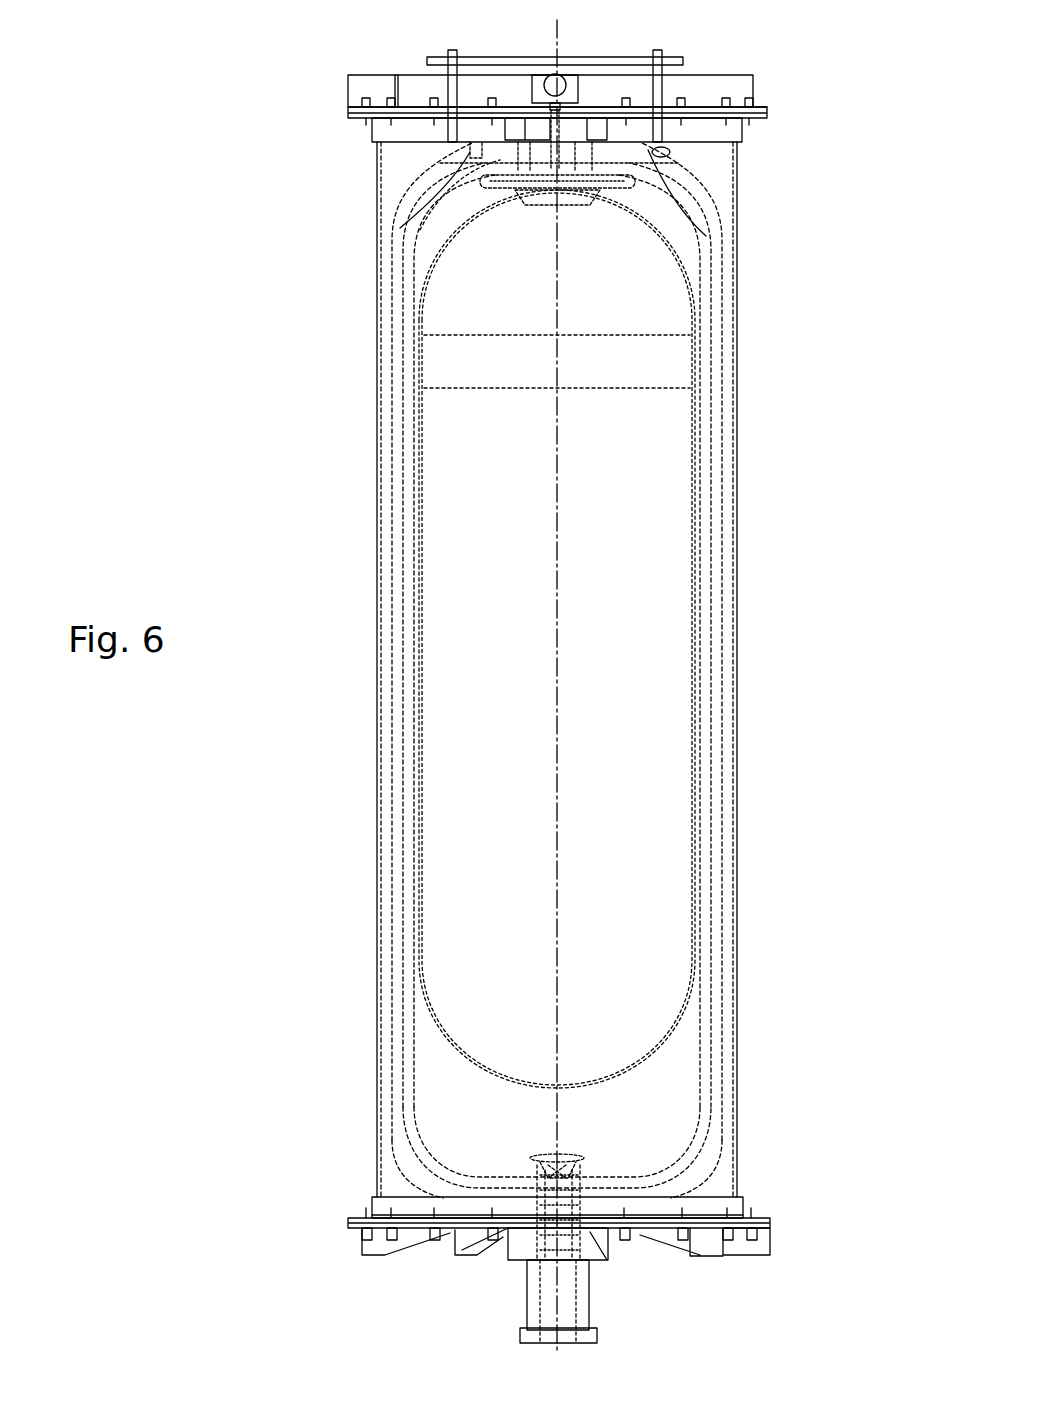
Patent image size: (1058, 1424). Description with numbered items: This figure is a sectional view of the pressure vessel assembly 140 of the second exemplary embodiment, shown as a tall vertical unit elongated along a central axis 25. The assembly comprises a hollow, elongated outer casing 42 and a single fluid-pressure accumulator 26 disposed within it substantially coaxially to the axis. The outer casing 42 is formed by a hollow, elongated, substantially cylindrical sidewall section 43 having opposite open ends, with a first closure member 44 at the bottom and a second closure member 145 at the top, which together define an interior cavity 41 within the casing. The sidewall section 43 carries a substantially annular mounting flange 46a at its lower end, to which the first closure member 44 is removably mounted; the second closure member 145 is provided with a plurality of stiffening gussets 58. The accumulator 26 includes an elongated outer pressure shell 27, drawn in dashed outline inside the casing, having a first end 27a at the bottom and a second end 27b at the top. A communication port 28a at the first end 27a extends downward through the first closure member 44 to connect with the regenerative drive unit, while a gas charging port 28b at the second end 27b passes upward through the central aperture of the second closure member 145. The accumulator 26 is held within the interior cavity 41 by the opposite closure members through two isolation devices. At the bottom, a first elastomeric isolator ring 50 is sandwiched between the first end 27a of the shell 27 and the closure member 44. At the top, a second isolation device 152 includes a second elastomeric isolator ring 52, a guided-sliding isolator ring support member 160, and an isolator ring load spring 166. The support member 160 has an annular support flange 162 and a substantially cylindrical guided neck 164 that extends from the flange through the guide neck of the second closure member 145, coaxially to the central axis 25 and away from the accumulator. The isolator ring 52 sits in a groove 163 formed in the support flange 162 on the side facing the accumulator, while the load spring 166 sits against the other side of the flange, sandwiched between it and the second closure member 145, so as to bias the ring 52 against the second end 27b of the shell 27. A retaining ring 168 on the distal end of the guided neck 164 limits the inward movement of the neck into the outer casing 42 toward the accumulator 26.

The pressure vessel assembly 140 is at (296, 524).
The central axis 25 is at (557, 641).
The fluid-pressure accumulator 26 is at (724, 527).
The outer pressure shell 27 is at (392, 626).
The first end of outer pressure shell 27a is at (445, 1190).
The second end of outer pressure shell 27b is at (670, 216).
The communication port 28a is at (527, 1297).
The gas charging port 28b is at (566, 86).
The interior cavity 41 is at (718, 1172).
The outer casing 42 is at (742, 702).
The sidewall section 43 is at (377, 742).
The first closure member 44 is at (354, 1230).
The mounting flange 46a is at (354, 1218).
The first elastomeric isolator ring 50 is at (672, 1210).
The second elastomeric isolator ring 52 is at (400, 228).
The stiffening gussets 58 is at (352, 90).
The second closure member 145 is at (766, 99).
The second isolation device 152 is at (430, 132).
The isolator ring support member 160 is at (437, 153).
The support flange 162 is at (670, 152).
The groove 163 is at (590, 166).
The guided neck 164 is at (630, 88).
The isolator ring load spring 166 is at (668, 130).
The retaining ring 168 is at (440, 58).